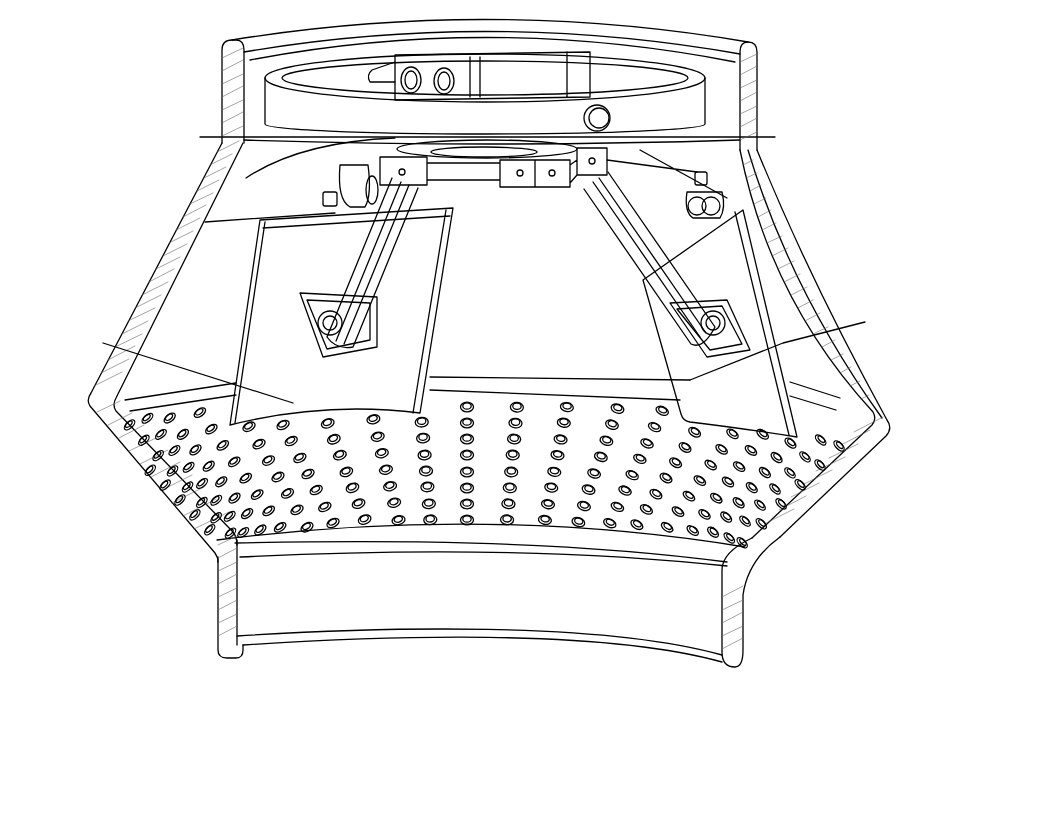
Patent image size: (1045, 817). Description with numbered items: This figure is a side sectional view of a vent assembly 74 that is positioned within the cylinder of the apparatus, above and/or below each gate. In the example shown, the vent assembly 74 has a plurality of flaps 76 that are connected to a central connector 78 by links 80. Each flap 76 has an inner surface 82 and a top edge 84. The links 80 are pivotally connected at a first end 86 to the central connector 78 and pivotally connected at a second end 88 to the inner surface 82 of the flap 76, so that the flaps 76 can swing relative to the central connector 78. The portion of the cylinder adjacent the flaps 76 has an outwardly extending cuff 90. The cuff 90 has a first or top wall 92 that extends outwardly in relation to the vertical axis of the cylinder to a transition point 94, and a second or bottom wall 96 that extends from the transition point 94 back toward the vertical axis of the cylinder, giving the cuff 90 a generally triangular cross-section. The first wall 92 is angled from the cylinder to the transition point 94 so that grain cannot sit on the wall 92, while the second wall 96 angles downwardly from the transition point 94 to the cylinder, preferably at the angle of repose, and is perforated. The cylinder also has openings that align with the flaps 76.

The vent assembly 74 is at (839, 88).
The flap 76 is at (103, 343).
The central connector 78 is at (705, 97).
The link 80 is at (250, 221).
The inner surface 82 is at (354, 397).
The top edge 84 is at (742, 228).
The first end 86 is at (318, 300).
The second end 88 is at (222, 137).
The cuff 90 is at (141, 88).
The first wall 92 is at (207, 177).
The transition point 94 is at (87, 405).
The second wall 96 is at (232, 540).